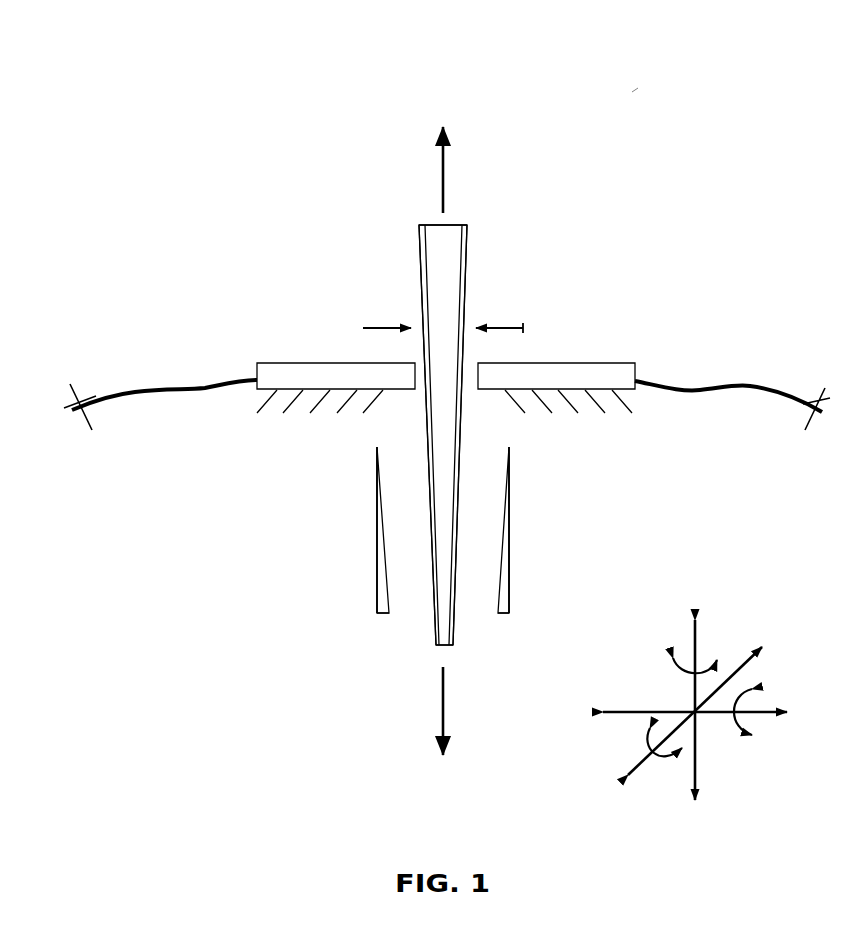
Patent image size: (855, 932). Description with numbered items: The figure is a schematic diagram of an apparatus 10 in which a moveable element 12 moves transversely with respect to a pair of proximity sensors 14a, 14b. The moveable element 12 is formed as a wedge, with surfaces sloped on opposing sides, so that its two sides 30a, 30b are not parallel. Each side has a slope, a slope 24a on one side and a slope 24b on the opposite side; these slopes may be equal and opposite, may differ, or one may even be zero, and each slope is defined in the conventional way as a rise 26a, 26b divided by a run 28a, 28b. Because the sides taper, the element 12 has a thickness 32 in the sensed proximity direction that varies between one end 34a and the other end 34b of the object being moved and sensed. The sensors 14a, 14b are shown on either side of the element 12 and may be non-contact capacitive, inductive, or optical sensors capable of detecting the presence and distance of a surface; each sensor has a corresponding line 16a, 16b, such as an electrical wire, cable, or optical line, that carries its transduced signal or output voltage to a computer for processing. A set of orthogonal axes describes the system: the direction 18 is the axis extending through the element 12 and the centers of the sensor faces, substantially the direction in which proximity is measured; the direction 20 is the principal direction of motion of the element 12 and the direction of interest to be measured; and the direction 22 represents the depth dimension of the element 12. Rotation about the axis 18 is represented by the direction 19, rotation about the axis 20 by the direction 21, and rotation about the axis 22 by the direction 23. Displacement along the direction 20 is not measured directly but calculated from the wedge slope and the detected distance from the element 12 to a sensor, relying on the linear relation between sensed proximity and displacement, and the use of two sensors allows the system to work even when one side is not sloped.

The apparatus 10 is at (634, 90).
The moveable element 12 is at (457, 238).
The sensor 14a is at (315, 363).
The sensor 14b is at (601, 363).
The line 16a is at (197, 386).
The line 16b is at (720, 386).
The direction 18 is at (763, 705).
The direction 19 is at (744, 740).
The direction 20 is at (700, 648).
The direction 21 is at (671, 664).
The direction 22 is at (737, 665).
The direction 23 is at (672, 764).
The slope 24a is at (386, 543).
The slope 24b is at (500, 545).
The rise 26a is at (376, 565).
The rise 26b is at (511, 560).
The run 28a is at (379, 614).
The run 28b is at (506, 614).
The side 30a is at (420, 290).
The side 30b is at (467, 288).
The thickness 32 is at (505, 328).
The end 34a is at (430, 225).
The end 34b is at (445, 647).